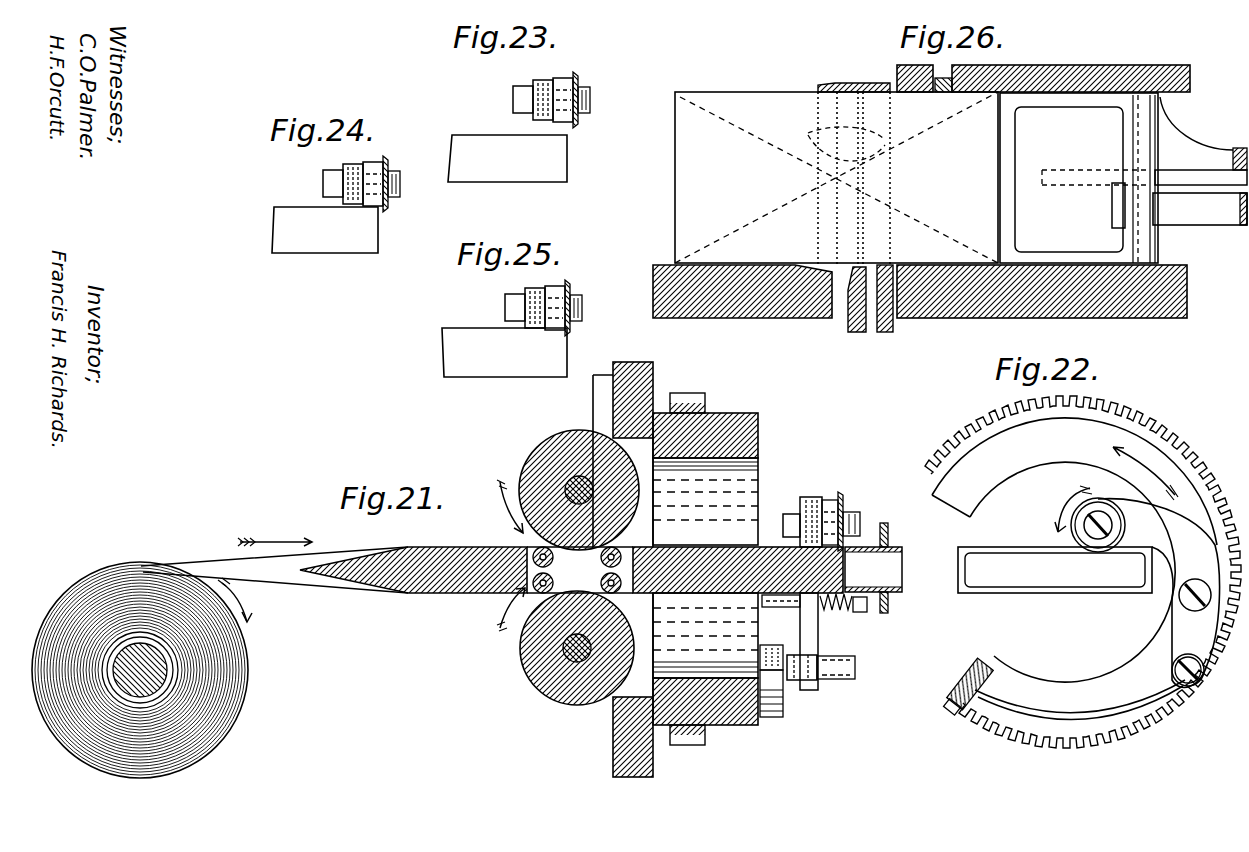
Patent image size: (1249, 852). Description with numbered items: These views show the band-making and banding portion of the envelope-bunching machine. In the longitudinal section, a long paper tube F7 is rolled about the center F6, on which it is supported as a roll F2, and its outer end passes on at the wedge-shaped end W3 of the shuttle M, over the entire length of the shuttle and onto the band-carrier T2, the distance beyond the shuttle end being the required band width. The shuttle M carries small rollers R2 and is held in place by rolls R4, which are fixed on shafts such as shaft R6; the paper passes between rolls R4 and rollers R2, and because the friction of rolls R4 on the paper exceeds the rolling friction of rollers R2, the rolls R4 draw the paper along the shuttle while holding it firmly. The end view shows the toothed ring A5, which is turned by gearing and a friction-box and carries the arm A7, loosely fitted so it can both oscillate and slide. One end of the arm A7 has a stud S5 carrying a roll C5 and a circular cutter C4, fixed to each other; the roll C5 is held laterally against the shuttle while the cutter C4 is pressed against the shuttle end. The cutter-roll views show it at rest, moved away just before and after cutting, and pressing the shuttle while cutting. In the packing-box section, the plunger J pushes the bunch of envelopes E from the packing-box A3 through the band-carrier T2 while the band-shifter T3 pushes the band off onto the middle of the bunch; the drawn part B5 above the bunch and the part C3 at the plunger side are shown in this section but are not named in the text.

In FIG. 21, the paper tube F7 is at (240, 558).
In FIG. 21, the shuttle end W3 is at (373, 588).
In FIG. 21, the coil of stock F2 is at (205, 658).
In FIG. 21, the center F6 is at (180, 682).
In FIG. 21, the rolls R4 is at (573, 455).
In FIG. 21, the shaft R6 is at (513, 481).
In FIG. 21, the small rollers R2 is at (600, 579).
In FIG. 21, the shuttle M is at (720, 557).
In FIG. 23, the shuttle M is at (507, 158).
In FIG. 24, the shuttle M is at (325, 230).
In FIG. 25, the shuttle M is at (504, 352).
In FIG. 21, the toothed ring A5 is at (758, 421).
In FIG. 22, the toothed ring A5 is at (1083, 572).
In FIG. 21, the roll C5 is at (823, 500).
In FIG. 24, the roll C5 is at (372, 162).
In FIG. 21, the band-carrier T2 is at (905, 546).
In FIG. 26, the band-carrier T2 is at (895, 322).
In FIG. 21, the band-shifter T3 is at (889, 612).
In FIG. 26, the band-shifter T3 is at (857, 334).
In FIG. 22, the arm A7 is at (1089, 586).
In FIG. 23, the stud S5 is at (592, 99).
In FIG. 24, the stud S5 is at (402, 180).
In FIG. 25, the stud S5 is at (585, 305).
In FIG. 23, the circular cutter C4 is at (580, 124).
In FIG. 24, the circular cutter C4 is at (389, 212).
In FIG. 25, the circular cutter C4 is at (572, 332).
In FIG. 26, the shaft B5 is at (830, 88).
In FIG. 26, the packing-box A3 is at (1192, 76).
In FIG. 26, the shaft C3 is at (1193, 230).
In FIG. 26, the bunch of envelopes E is at (836, 177).
In FIG. 26, the plunger J is at (1079, 178).